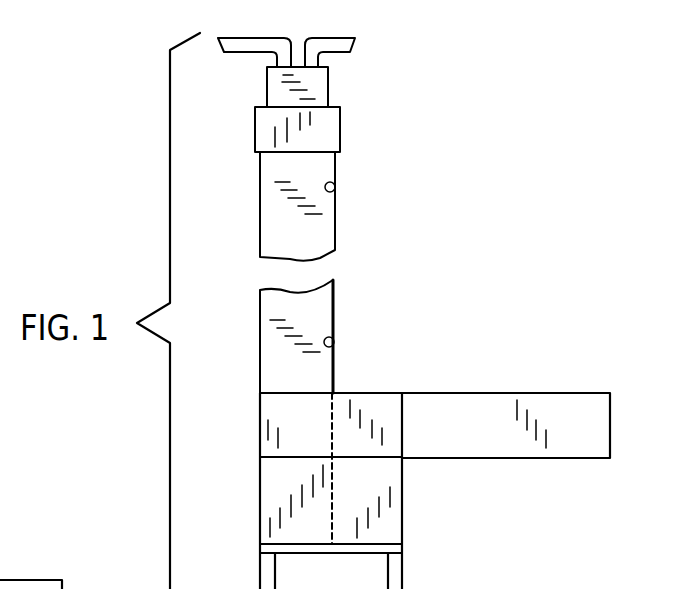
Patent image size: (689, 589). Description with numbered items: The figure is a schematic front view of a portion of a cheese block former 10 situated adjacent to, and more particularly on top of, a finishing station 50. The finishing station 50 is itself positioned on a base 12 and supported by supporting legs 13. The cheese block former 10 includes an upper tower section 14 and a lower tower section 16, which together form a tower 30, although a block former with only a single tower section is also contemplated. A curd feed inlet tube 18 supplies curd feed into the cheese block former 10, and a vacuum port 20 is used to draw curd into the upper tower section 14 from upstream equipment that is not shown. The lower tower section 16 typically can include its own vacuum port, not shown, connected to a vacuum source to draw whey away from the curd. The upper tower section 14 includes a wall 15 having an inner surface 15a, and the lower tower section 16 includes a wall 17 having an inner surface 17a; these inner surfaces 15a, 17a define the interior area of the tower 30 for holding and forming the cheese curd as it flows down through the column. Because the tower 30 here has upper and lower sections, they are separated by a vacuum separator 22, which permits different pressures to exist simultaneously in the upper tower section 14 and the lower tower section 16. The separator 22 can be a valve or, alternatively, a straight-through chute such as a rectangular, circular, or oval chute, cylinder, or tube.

The cheese block former 10 is at (311, 134).
The base 12 is at (428, 585).
The supporting legs 13 is at (265, 577).
The upper tower section 14 is at (315, 81).
The wall 15 is at (335, 163).
The inner surface 15a is at (336, 186).
The lower tower section 16 is at (275, 215).
The wall 17 is at (335, 375).
The inner surface 17a is at (337, 340).
The curd feed inlet tube 18 is at (258, 43).
The vacuum port 20 is at (343, 45).
The vacuum separator 22 is at (265, 127).
The tower 30 is at (346, 336).
The finishing station 50 is at (243, 430).